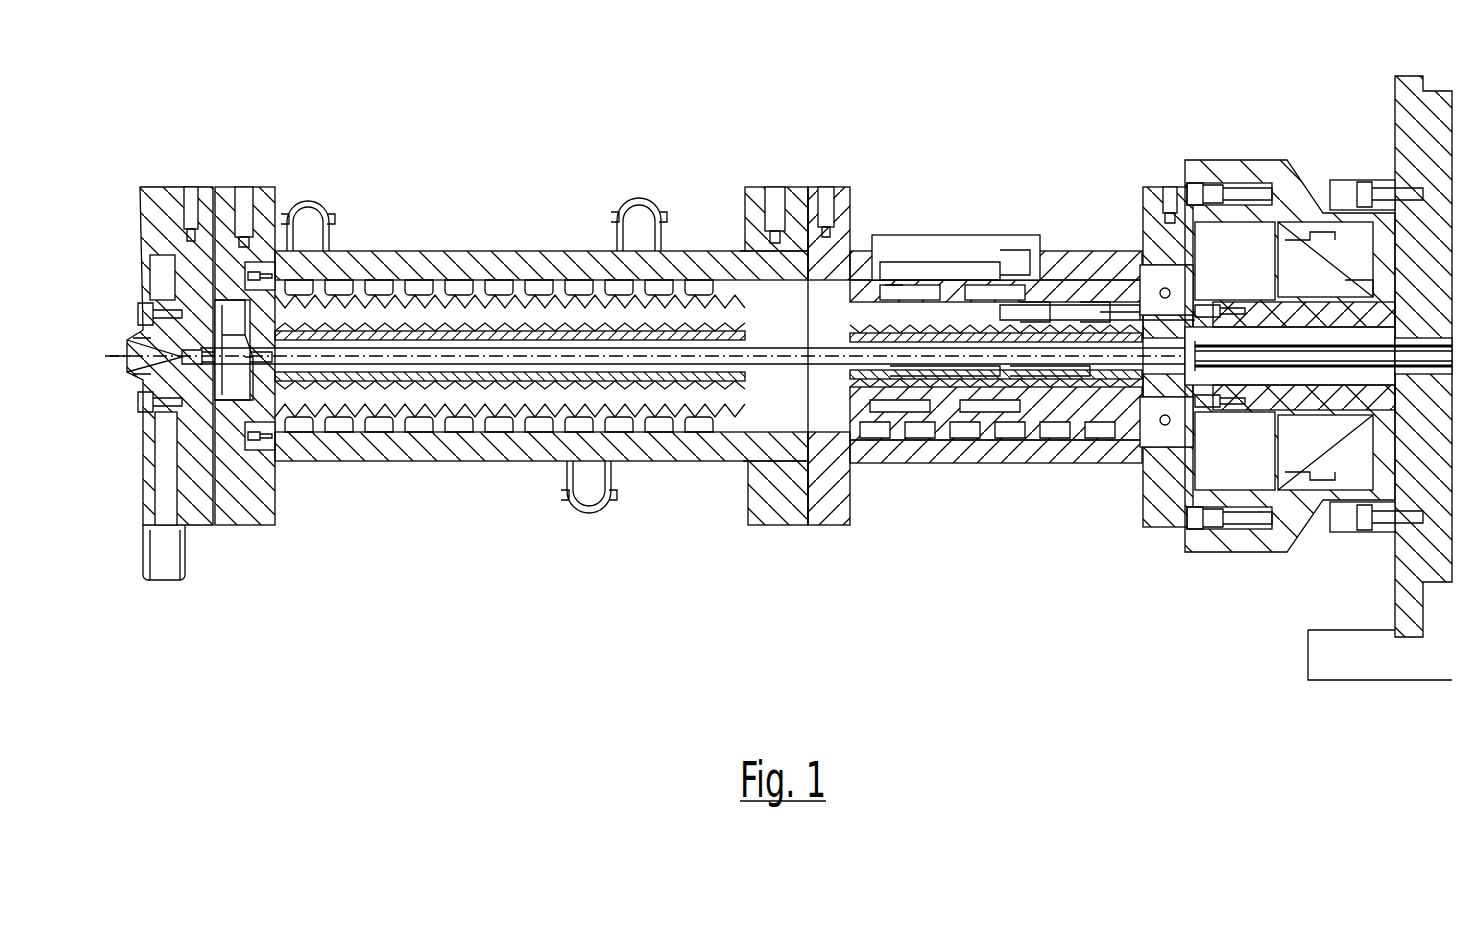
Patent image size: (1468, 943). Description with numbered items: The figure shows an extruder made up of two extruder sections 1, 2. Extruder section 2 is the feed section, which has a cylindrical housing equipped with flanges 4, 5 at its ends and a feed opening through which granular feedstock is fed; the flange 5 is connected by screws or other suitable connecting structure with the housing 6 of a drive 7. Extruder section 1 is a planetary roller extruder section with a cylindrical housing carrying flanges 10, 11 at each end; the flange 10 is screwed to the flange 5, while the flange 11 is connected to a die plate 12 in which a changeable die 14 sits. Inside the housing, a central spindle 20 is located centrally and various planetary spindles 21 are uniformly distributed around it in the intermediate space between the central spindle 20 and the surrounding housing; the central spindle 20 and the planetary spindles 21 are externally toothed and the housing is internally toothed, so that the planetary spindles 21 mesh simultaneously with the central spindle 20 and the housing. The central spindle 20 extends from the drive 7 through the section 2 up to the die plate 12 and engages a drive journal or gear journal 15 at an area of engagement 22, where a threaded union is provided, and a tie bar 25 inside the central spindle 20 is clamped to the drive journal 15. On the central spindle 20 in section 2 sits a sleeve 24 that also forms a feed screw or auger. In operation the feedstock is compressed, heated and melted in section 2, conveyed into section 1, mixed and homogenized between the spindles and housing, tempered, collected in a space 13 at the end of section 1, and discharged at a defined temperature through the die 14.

The extruder section 1 is at (395, 449).
The extruder section 2 is at (975, 457).
The flange 4 is at (1152, 186).
The flange 5 is at (840, 193).
The housing 6 is at (1260, 172).
The drive 7 is at (1432, 148).
The flange 10 is at (760, 198).
The flange 11 is at (262, 200).
The die plate 12 is at (165, 210).
The space 13 is at (225, 382).
The die 14 is at (137, 372).
The drive journal 15 is at (1167, 394).
The central spindle 20 is at (690, 384).
The planetary spindles 21 is at (560, 310).
The area of engagement 22 is at (1167, 332).
The sleeve 24 is at (920, 390).
The tie bar 25 is at (1280, 384).